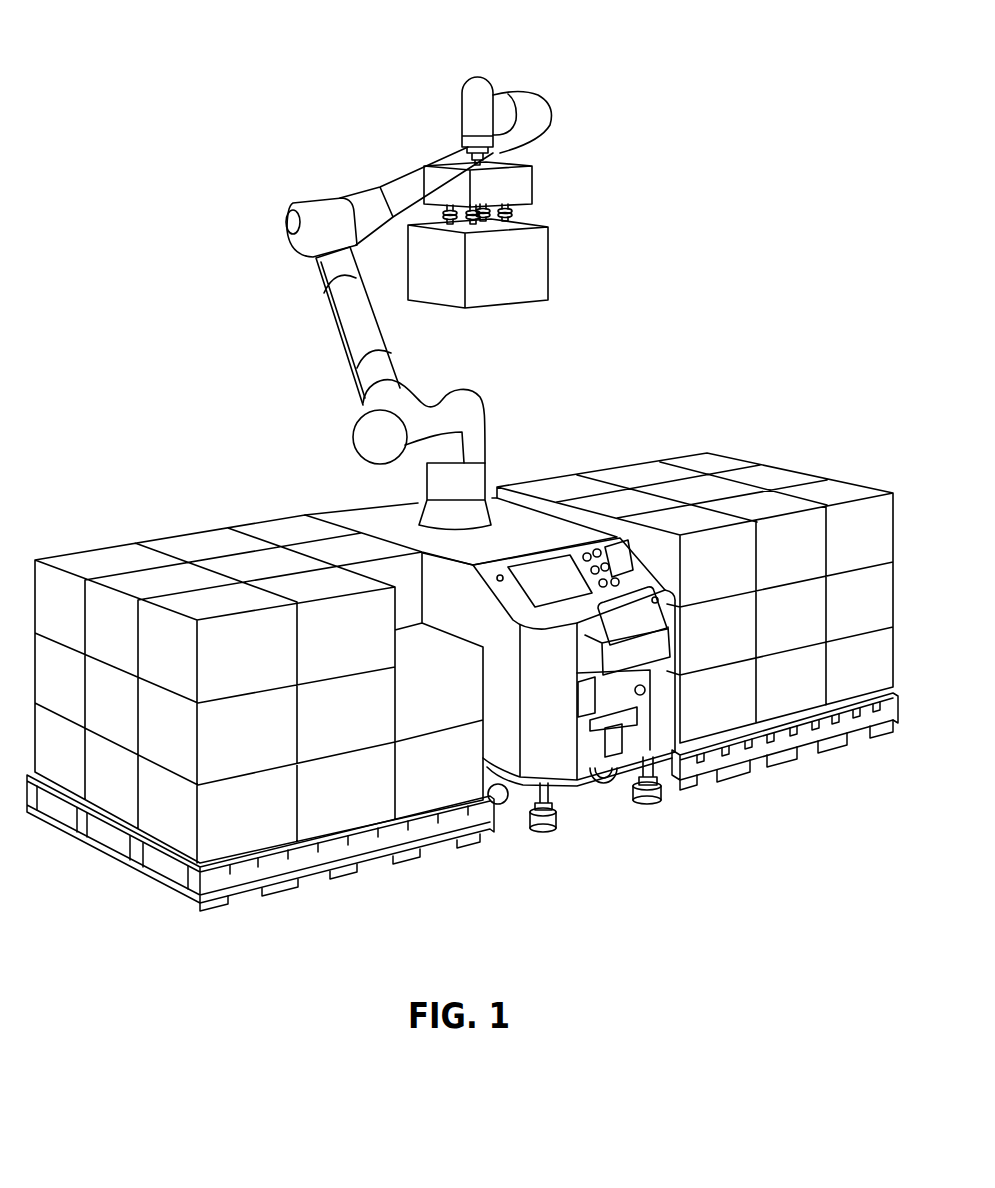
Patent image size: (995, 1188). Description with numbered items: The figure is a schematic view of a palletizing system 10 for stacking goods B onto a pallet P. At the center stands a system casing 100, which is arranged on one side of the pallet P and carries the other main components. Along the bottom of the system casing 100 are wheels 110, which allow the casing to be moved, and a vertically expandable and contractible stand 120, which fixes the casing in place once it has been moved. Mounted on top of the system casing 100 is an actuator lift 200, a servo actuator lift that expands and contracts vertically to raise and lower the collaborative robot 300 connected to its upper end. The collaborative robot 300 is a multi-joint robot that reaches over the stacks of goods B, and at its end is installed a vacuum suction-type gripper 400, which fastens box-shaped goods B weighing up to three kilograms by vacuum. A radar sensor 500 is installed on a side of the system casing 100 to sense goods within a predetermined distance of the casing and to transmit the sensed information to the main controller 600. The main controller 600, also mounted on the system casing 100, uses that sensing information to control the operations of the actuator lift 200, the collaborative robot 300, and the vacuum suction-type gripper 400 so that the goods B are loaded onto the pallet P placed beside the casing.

The palletizing system 10 is at (185, 37).
The system casing 100 is at (557, 748).
The wheels 110 is at (613, 742).
The stand 120 is at (663, 800).
The actuator lift 200 is at (477, 478).
The collaborative robot 300 is at (357, 315).
The vacuum suction-type gripper 400 is at (513, 183).
The radar sensor 500 is at (642, 790).
The main controller 600 is at (520, 590).
The goods B is at (540, 260).
The pallet P is at (793, 757).